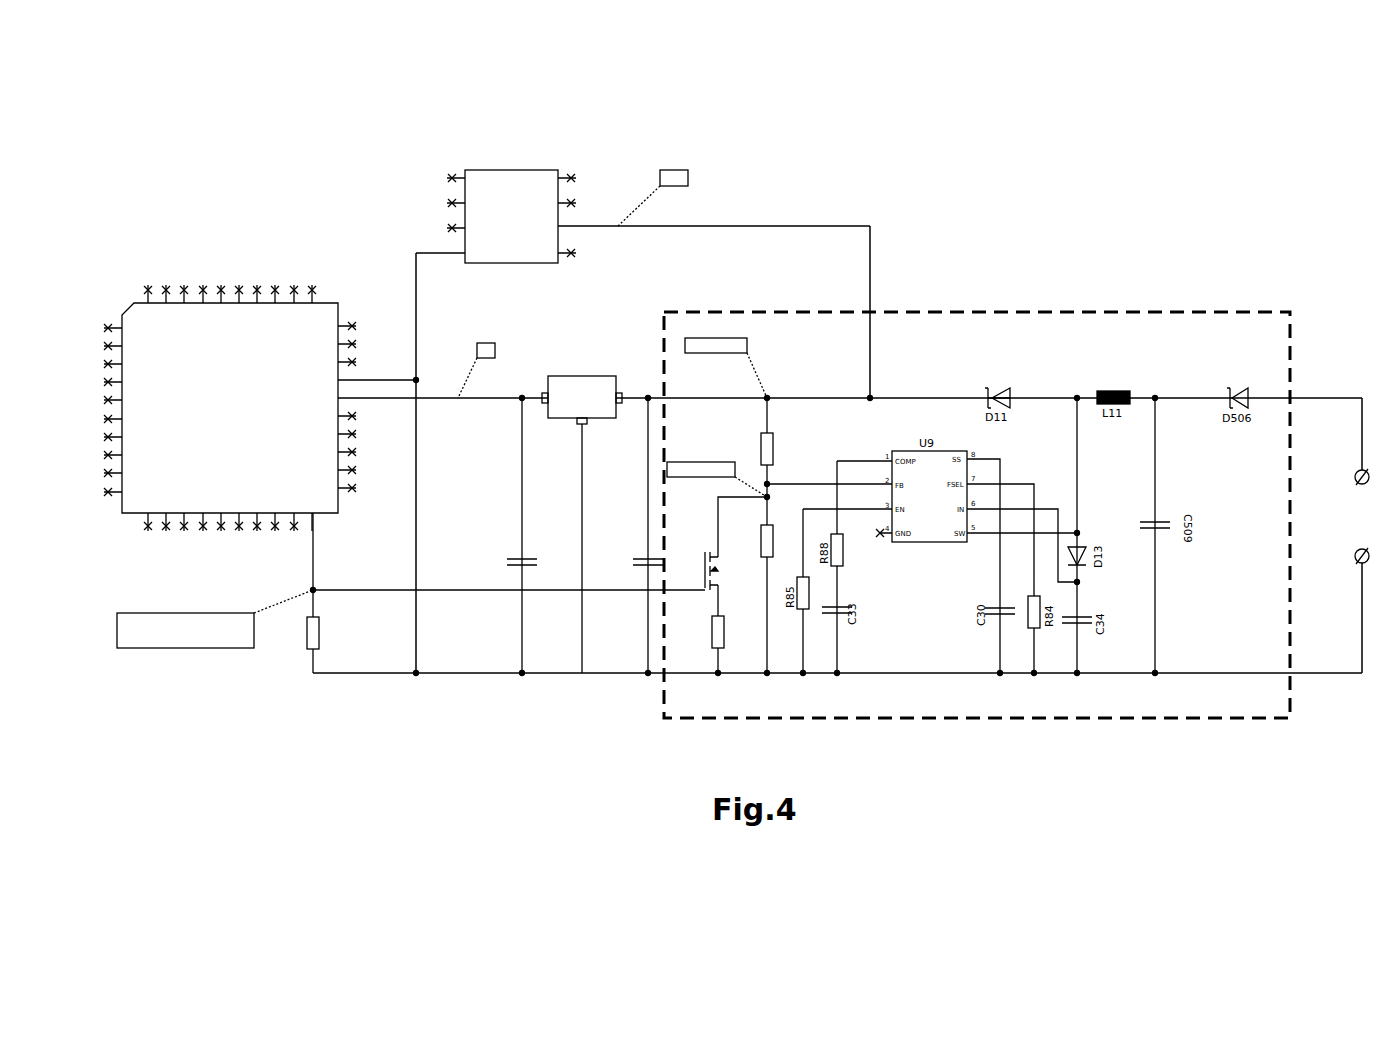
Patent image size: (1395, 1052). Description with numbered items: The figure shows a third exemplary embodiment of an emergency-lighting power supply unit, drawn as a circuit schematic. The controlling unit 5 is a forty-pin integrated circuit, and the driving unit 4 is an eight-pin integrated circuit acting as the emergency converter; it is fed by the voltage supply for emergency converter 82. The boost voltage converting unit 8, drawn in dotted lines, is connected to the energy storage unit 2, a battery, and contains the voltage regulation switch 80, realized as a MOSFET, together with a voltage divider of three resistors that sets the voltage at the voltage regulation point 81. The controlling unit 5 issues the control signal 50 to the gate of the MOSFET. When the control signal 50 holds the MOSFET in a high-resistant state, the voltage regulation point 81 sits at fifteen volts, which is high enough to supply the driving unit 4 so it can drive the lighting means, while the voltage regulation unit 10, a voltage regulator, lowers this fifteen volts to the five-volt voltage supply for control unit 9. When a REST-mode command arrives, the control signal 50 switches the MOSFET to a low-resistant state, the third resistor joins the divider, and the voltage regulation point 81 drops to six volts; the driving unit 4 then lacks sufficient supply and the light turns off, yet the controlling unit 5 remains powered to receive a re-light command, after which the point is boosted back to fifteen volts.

The energy storage unit 2 is at (1368, 510).
The driving unit 4 is at (558, 204).
The controlling unit 5 is at (124, 307).
The boost voltage converting unit 8 is at (1237, 312).
The voltage supply for control unit 9 is at (396, 398).
The voltage regulation unit 10 is at (590, 380).
The control signal 50 is at (313, 562).
The voltage regulation switch 80 is at (704, 578).
The voltage regulation point 81 is at (783, 398).
The voltage supply for emergency converter 82 is at (870, 316).